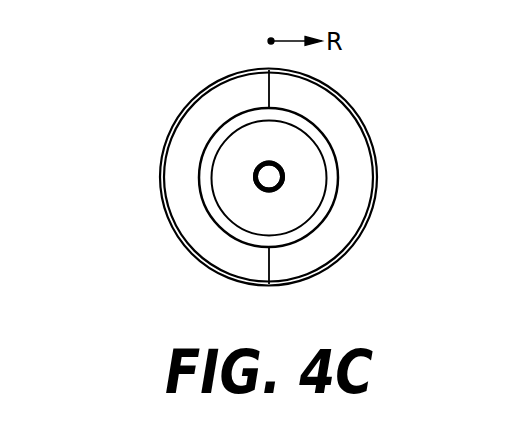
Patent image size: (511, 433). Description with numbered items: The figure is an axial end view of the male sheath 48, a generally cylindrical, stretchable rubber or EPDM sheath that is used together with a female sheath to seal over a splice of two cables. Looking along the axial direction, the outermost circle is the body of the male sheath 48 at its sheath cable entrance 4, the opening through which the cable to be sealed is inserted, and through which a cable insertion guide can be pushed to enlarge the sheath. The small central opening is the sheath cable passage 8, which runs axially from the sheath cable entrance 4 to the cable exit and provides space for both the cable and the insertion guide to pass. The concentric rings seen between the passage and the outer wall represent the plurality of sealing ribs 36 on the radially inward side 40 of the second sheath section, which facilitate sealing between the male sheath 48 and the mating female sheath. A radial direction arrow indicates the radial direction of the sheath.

The sheath cable entrance 4 is at (370, 218).
The male sheath 48 is at (142, 94).
The sheath cable passage 8 is at (265, 180).
The sealing ribs 36 is at (356, 143).
The radially inward side 40 is at (283, 168).